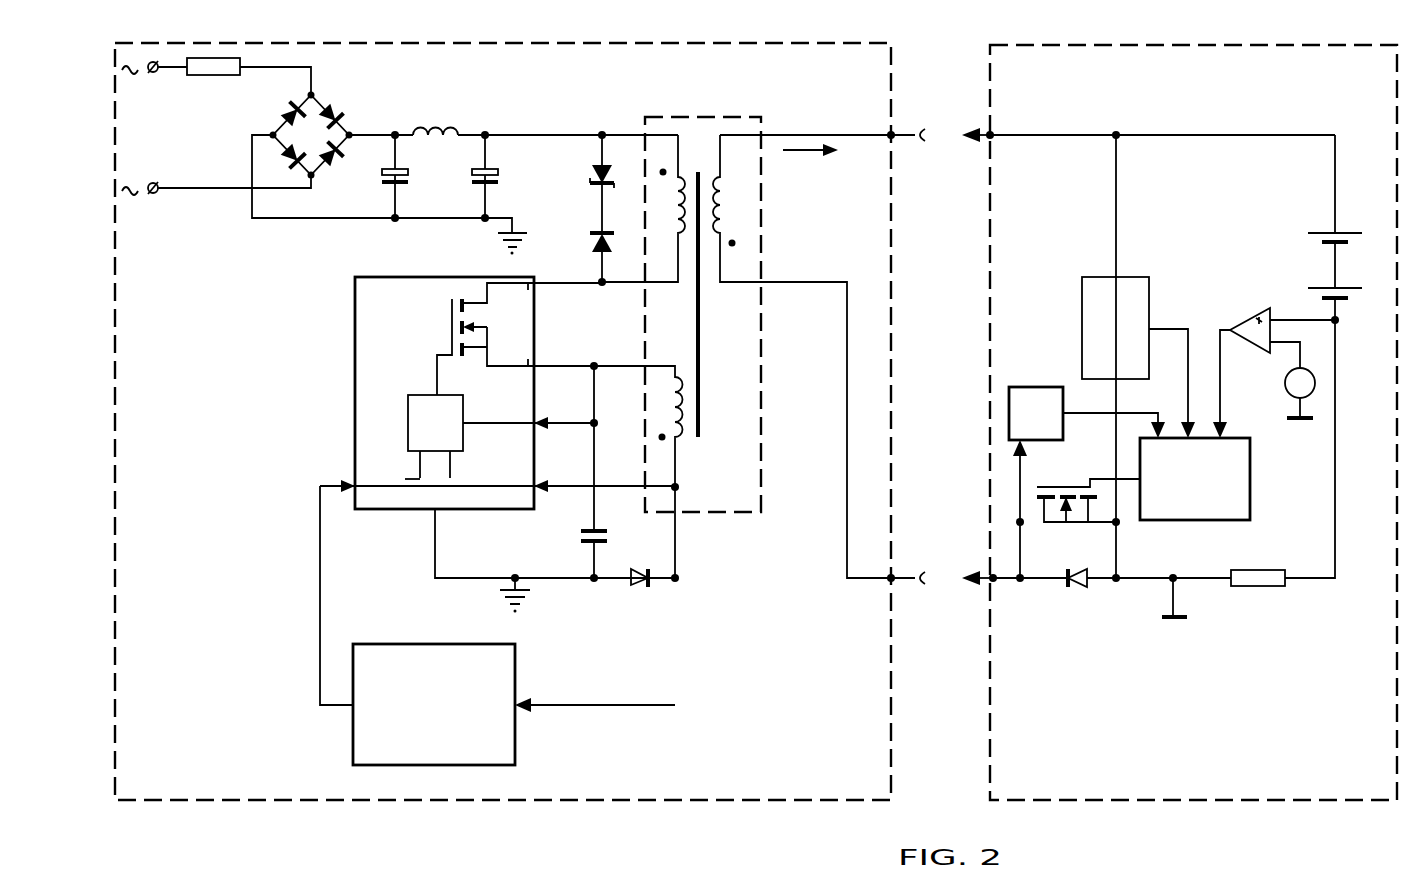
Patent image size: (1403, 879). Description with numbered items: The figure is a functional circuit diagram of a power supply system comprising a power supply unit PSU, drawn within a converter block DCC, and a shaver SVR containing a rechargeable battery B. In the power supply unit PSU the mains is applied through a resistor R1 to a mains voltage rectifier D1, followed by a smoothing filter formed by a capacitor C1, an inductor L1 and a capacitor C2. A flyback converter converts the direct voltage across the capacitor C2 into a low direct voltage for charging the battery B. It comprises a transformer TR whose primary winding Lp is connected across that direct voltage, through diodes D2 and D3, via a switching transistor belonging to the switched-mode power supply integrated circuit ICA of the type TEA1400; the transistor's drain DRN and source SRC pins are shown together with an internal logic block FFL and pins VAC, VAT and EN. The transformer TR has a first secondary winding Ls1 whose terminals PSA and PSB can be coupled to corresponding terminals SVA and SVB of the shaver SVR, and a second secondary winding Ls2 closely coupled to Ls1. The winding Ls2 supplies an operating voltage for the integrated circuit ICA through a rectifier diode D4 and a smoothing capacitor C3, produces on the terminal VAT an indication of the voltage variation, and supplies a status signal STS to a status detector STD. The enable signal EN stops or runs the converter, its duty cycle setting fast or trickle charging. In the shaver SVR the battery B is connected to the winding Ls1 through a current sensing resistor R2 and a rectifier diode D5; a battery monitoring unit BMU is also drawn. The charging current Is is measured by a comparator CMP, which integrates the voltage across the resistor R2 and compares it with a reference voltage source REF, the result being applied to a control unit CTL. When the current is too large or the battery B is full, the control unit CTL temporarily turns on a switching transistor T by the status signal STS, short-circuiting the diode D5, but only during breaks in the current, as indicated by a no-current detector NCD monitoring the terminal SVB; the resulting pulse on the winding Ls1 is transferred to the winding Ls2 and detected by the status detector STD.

The DC converter DCC is at (262, 400).
The power supply unit PSU is at (393, 43).
The resistor R1 is at (213, 75).
The mains voltage rectifier D1 is at (389, 173).
The smoothing filter inductor L1 is at (440, 124).
The smoothing filter capacitor C1 is at (410, 171).
The capacitor C2 is at (500, 171).
The diode D2 is at (595, 167).
The diode D3 is at (594, 242).
The transformer TR is at (725, 117).
The primary winding Lp is at (643, 208).
The first secondary winding Ls1 is at (802, 356).
The second secondary winding Ls2 is at (672, 474).
The current Is is at (810, 163).
The switched-mode power supply integrated circuit ICA is at (355, 330).
The TEA 1400 TEA1400 is at (480, 325).
The drain terminal DRN is at (509, 295).
The source terminal SRC is at (509, 355).
The flip-flop logic FFL is at (435, 436).
The voltage input VAC is at (530, 415).
The terminal VAT is at (497, 477).
The enable signal EN is at (400, 475).
The smoothing capacitor C3 is at (608, 531).
The rectifier diode D4 is at (637, 586).
The status detector STD is at (515, 675).
The status signal STS is at (827, 585).
The terminal PSA is at (893, 133).
The terminal PSB is at (893, 580).
The shaver SVR is at (1143, 45).
The terminal SVA is at (992, 133).
The terminal SVB is at (995, 580).
The battery monitoring unit BMU is at (1133, 277).
The comparator CMP is at (1262, 318).
The battery B is at (1342, 265).
The no-current detector NCD is at (1009, 400).
The reference voltage source REF is at (1287, 403).
The control unit CTL is at (1250, 485).
The switching transistor T is at (1058, 525).
The rectifier diode D5 is at (1082, 589).
The current sensing resistor R2 is at (1260, 586).